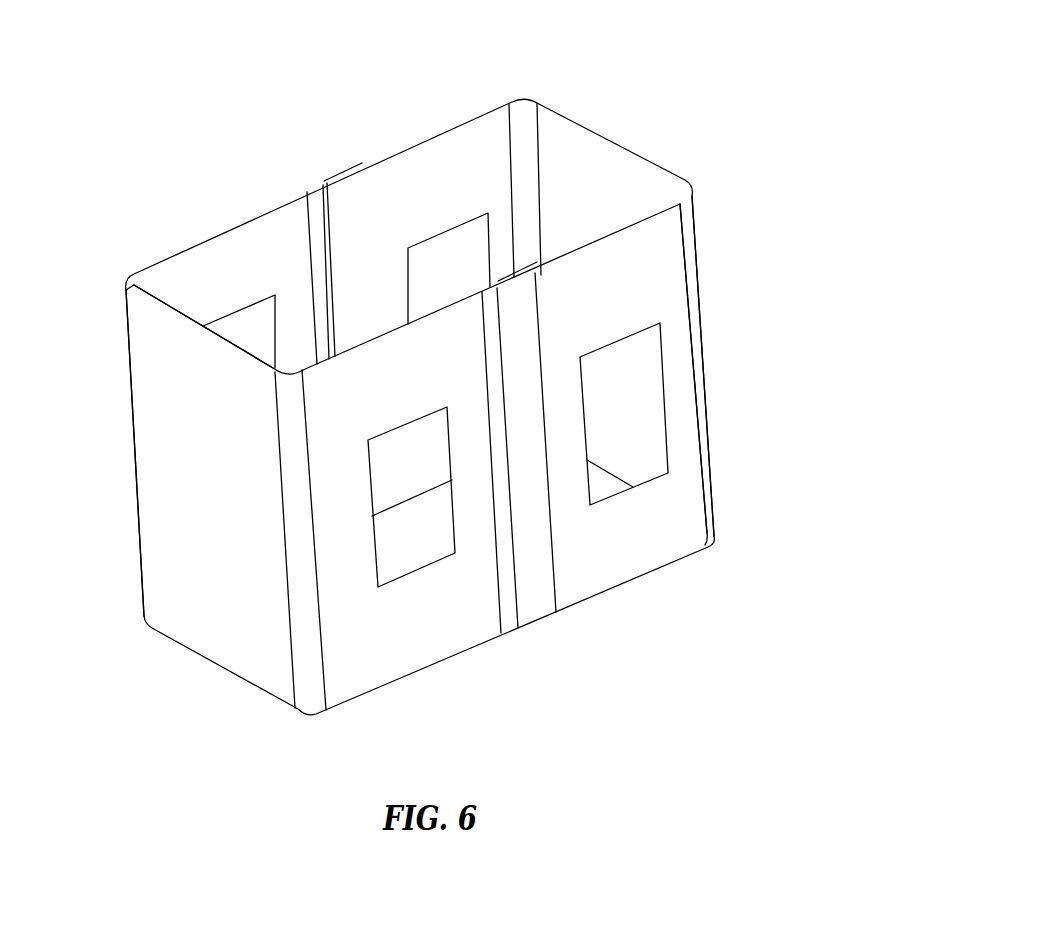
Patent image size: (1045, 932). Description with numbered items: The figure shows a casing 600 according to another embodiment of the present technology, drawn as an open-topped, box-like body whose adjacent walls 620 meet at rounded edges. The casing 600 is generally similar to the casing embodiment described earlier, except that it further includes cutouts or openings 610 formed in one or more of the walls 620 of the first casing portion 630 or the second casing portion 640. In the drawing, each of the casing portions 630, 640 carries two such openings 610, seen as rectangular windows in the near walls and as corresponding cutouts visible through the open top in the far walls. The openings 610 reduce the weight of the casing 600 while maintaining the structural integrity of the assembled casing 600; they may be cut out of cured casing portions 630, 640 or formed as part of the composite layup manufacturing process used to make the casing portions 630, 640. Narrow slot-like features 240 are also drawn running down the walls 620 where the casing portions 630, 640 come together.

The casing 600 is at (698, 78).
The openings 610 is at (435, 400).
The walls 620 is at (455, 127).
The first casing portion 630 is at (163, 458).
The second casing portion 640 is at (699, 289).
The slot 240 is at (358, 160).